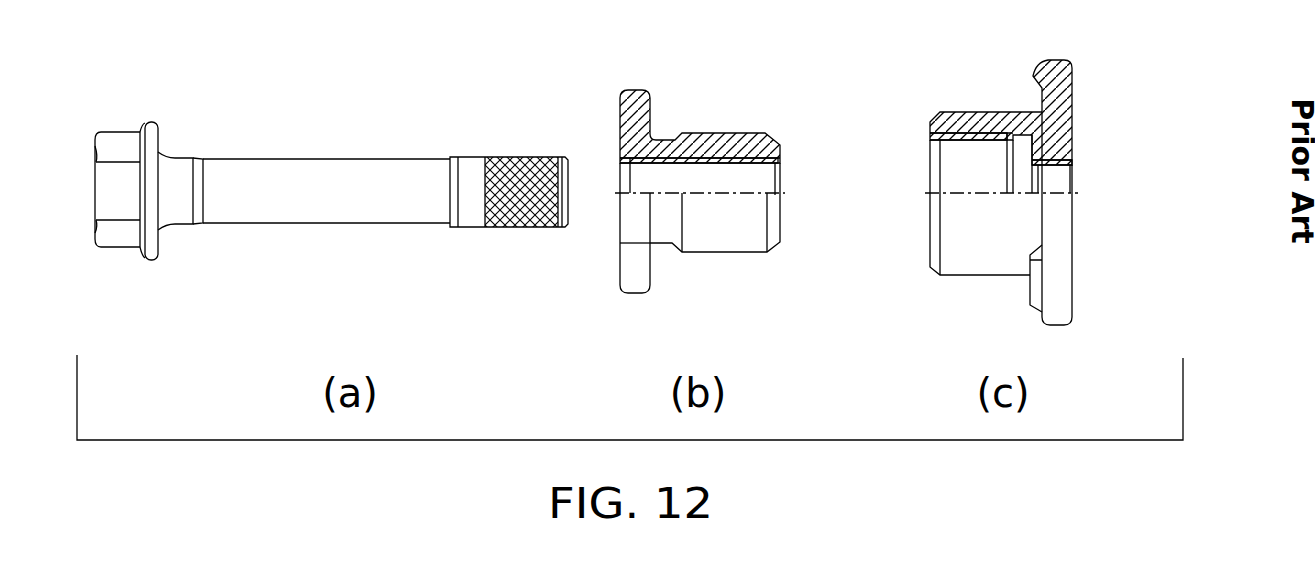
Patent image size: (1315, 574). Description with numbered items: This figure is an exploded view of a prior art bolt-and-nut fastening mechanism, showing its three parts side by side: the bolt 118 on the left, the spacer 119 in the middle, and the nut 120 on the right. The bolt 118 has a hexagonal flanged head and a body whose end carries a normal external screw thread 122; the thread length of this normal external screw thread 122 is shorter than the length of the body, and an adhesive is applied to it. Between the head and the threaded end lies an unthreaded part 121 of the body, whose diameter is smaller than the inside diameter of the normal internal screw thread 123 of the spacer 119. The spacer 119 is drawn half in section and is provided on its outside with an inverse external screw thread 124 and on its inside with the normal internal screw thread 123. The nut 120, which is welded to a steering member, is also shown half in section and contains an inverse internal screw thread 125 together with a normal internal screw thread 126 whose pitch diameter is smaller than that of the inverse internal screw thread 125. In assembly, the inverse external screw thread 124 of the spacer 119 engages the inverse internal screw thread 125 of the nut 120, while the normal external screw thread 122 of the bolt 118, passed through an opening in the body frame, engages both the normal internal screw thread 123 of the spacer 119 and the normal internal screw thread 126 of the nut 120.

The bolt 118 is at (120, 173).
The spacer 119 is at (633, 235).
The nut 120 is at (972, 232).
The unthreaded part 121 is at (317, 168).
The normal external screw thread 122 is at (517, 175).
The normal internal screw thread 123 is at (750, 163).
The inverse external screw thread 124 is at (713, 132).
The inverse internal screw thread 125 is at (968, 140).
The normal internal screw thread 126 is at (1057, 163).